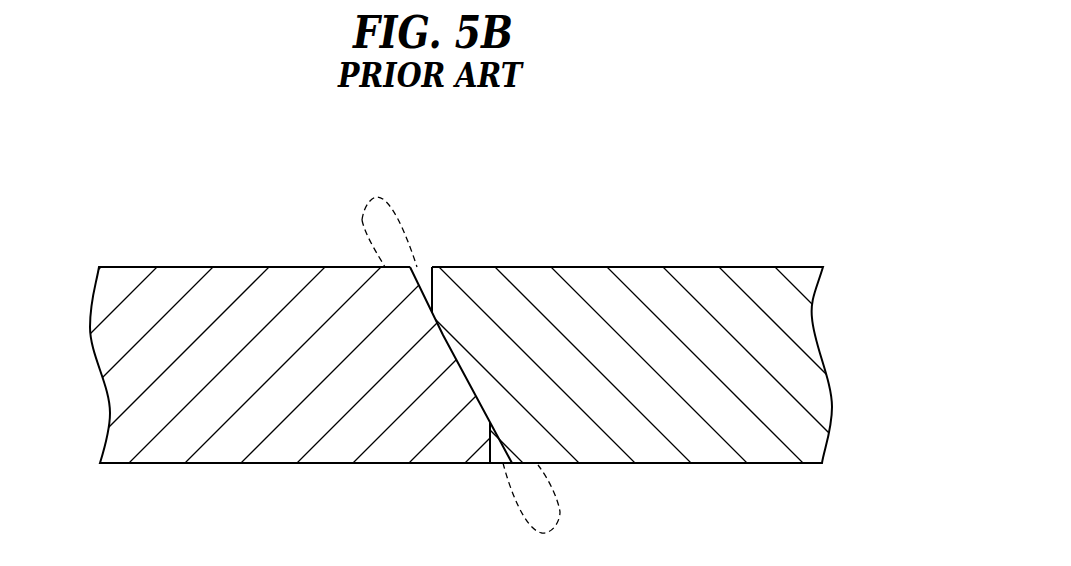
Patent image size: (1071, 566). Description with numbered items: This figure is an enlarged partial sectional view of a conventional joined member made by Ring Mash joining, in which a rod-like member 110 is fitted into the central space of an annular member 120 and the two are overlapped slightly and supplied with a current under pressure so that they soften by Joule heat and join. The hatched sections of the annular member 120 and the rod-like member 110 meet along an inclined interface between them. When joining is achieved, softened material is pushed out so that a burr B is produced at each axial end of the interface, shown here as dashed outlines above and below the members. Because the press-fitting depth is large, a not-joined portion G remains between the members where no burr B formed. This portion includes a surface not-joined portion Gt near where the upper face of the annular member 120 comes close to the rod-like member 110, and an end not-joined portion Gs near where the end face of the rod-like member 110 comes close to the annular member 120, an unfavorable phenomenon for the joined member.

The annular member 120 is at (196, 267).
The rod-like member 110 is at (647, 267).
The not-joined portion G is at (461, 365).
The surface not-joined portion Gt is at (421, 283).
The end not-joined portion Gs is at (497, 463).
The burr B is at (362, 220).